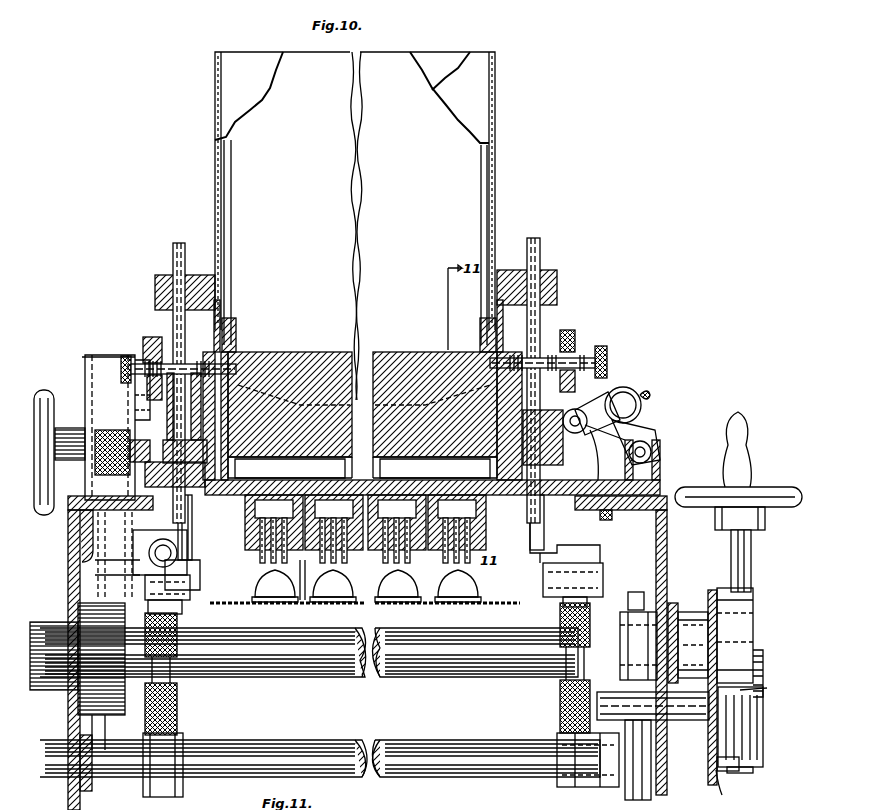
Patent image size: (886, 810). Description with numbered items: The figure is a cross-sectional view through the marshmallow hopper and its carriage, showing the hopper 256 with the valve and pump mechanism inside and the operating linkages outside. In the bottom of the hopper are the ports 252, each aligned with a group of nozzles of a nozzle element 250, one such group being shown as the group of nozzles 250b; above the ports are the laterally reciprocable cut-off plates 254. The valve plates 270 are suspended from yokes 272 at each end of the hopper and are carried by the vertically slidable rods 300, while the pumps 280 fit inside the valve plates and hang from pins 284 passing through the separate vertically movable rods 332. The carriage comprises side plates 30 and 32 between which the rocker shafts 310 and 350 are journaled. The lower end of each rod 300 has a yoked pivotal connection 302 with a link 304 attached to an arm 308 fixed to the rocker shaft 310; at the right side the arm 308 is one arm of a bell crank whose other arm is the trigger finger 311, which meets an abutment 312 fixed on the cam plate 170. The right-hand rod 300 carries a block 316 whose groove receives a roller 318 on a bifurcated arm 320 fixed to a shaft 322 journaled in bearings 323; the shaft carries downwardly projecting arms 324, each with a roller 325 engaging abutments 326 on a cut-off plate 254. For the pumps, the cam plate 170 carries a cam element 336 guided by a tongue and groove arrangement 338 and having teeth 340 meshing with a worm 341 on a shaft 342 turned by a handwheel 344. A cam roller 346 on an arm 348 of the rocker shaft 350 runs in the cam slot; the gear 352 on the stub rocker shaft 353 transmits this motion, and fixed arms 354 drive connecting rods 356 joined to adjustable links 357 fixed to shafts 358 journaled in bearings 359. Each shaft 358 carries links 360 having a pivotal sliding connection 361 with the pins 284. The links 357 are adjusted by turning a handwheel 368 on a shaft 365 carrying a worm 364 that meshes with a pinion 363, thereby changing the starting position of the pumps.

The hopper 256 is at (470, 54).
The vertically slidable rod 300 is at (166, 278).
The vertically movable rod 332 is at (176, 244).
The pin 284 is at (130, 355).
The link 360 is at (152, 337).
The pivotal sliding connection 361 is at (200, 340).
The yoke 272 is at (238, 330).
The valve plate 270 is at (272, 380).
The pump 280 is at (400, 380).
The cut-off plate 254 is at (232, 488).
The port 252 is at (310, 480).
The shaft 365 is at (168, 452).
The nozzle element 250 is at (240, 535).
The group of nozzles 250b is at (300, 596).
The connecting rod 356 is at (70, 530).
The bearing 359 is at (80, 564).
The stub rocker shaft 353 is at (50, 640).
The gear 352 is at (95, 685).
The side plate 32 is at (70, 735).
The adjustable link 357 is at (105, 358).
The shaft 358 is at (82, 356).
The handwheel 368 is at (45, 392).
The worm 364 is at (100, 430).
The pinion 363 is at (130, 425).
The yoked pivotal connection 302 is at (190, 590).
The fixed arm 354 is at (178, 603).
The link 304 is at (170, 675).
The rocker shaft 350 is at (345, 660).
The rocker shaft 310 is at (455, 742).
The side plate 30 is at (668, 555).
The roller 318 is at (610, 511).
The shaft 322 is at (640, 398).
The bifurcated arm 320 is at (616, 392).
The block 316 is at (580, 410).
The downwardly projecting arm 324 is at (630, 422).
The bearing 323 is at (648, 440).
The roller 325 is at (652, 450).
The abutment 326 is at (660, 466).
The handwheel 344 is at (772, 492).
The shaft 342 is at (752, 555).
The cam plate 170 is at (708, 780).
The teeth 340 is at (755, 598).
The cam roller 346 is at (766, 652).
The worm 341 is at (768, 680).
The tongue and groove arrangement 338 is at (767, 745).
The cam element 336 is at (735, 775).
The arm 348 is at (692, 608).
The trigger finger 311 is at (600, 700).
The abutment 312 is at (630, 790).
The arm 308 is at (595, 765).